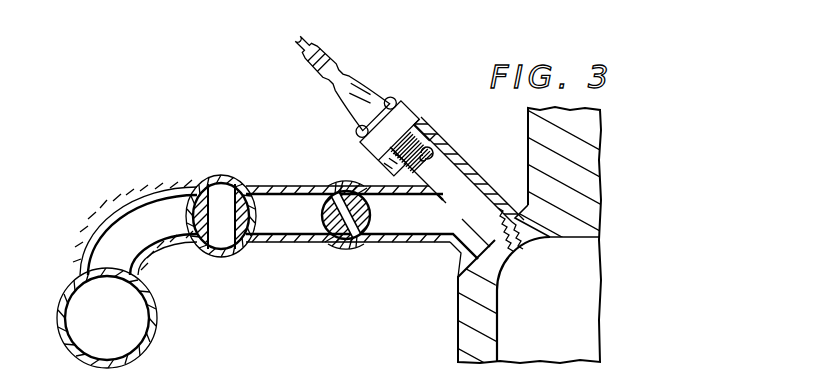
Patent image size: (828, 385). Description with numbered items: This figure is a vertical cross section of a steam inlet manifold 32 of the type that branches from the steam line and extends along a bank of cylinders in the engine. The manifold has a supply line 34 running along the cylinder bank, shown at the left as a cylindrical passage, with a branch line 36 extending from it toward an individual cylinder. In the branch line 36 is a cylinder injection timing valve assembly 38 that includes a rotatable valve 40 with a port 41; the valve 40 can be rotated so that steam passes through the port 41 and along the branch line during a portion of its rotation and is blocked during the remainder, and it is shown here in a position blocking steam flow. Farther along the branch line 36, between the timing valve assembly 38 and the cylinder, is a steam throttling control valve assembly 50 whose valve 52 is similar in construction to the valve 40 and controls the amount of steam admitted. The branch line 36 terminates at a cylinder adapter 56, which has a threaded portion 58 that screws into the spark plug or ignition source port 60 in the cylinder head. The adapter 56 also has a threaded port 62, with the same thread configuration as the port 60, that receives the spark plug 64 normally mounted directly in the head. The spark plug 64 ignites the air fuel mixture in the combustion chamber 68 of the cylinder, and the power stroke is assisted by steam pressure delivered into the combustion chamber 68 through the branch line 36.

The steam inlet manifold 32 is at (160, 313).
The supply line 34 is at (78, 278).
The branch line 36 is at (281, 187).
The cylinder injection timing valve assembly 38 is at (216, 213).
The rotatable valve 40 is at (250, 242).
The port 41 is at (222, 200).
The steam throttling control valve assembly 50 is at (361, 215).
The valve 52 is at (371, 216).
The cylinder adapter 56 is at (478, 172).
The threaded portion 58 is at (518, 262).
The spark plug or ignition source port 60 is at (496, 287).
The threaded port 62 is at (432, 144).
The spark plug 64 is at (380, 93).
The combustion chamber 68 is at (572, 334).